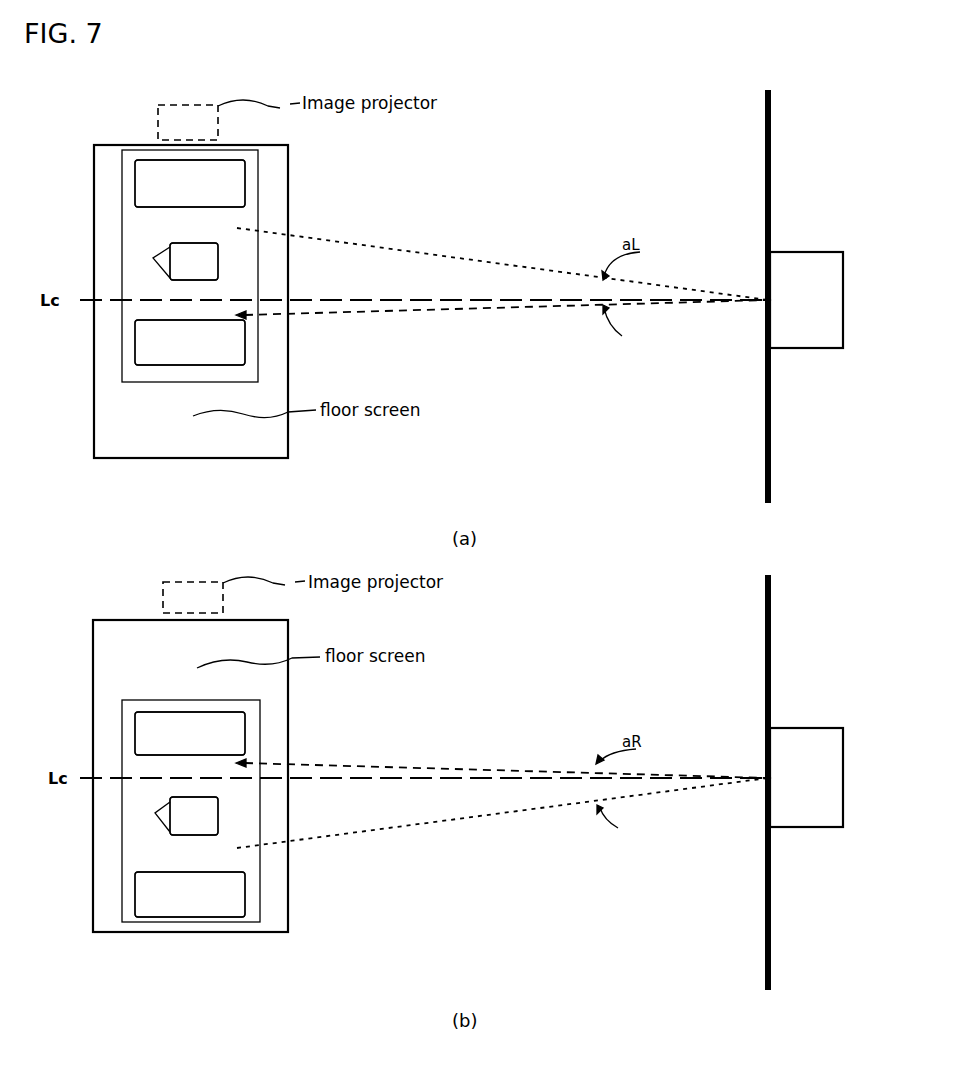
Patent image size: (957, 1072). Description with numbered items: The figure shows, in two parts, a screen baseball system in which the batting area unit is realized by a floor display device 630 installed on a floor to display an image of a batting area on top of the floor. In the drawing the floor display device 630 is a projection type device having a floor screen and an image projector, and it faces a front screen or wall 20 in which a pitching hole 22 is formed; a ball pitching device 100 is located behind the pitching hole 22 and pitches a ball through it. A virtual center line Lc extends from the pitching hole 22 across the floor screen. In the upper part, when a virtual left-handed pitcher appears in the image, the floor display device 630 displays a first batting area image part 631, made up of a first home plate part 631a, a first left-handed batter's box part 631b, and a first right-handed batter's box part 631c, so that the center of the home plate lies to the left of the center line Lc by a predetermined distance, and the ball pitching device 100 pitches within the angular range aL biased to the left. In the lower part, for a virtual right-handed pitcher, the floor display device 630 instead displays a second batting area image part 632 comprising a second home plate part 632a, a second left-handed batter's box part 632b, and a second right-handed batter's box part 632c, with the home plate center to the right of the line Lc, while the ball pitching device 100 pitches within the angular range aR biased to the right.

The wall 20 is at (772, 175).
The pitching hole 22 is at (765, 292).
The ball pitching device 100 is at (843, 296).
The floor display device 630 is at (289, 347).
The first batting area image part 631 is at (260, 180).
The first home plate part 631a is at (153, 259).
The first left-handed batter's box part 631b is at (135, 178).
The first right-handed batter's box part 631c is at (135, 336).
The second batting area image part 632 is at (260, 898).
The second home plate part 632a is at (155, 813).
The second left-handed batter's box part 632b is at (135, 740).
The second right-handed batter's box part 632c is at (135, 887).